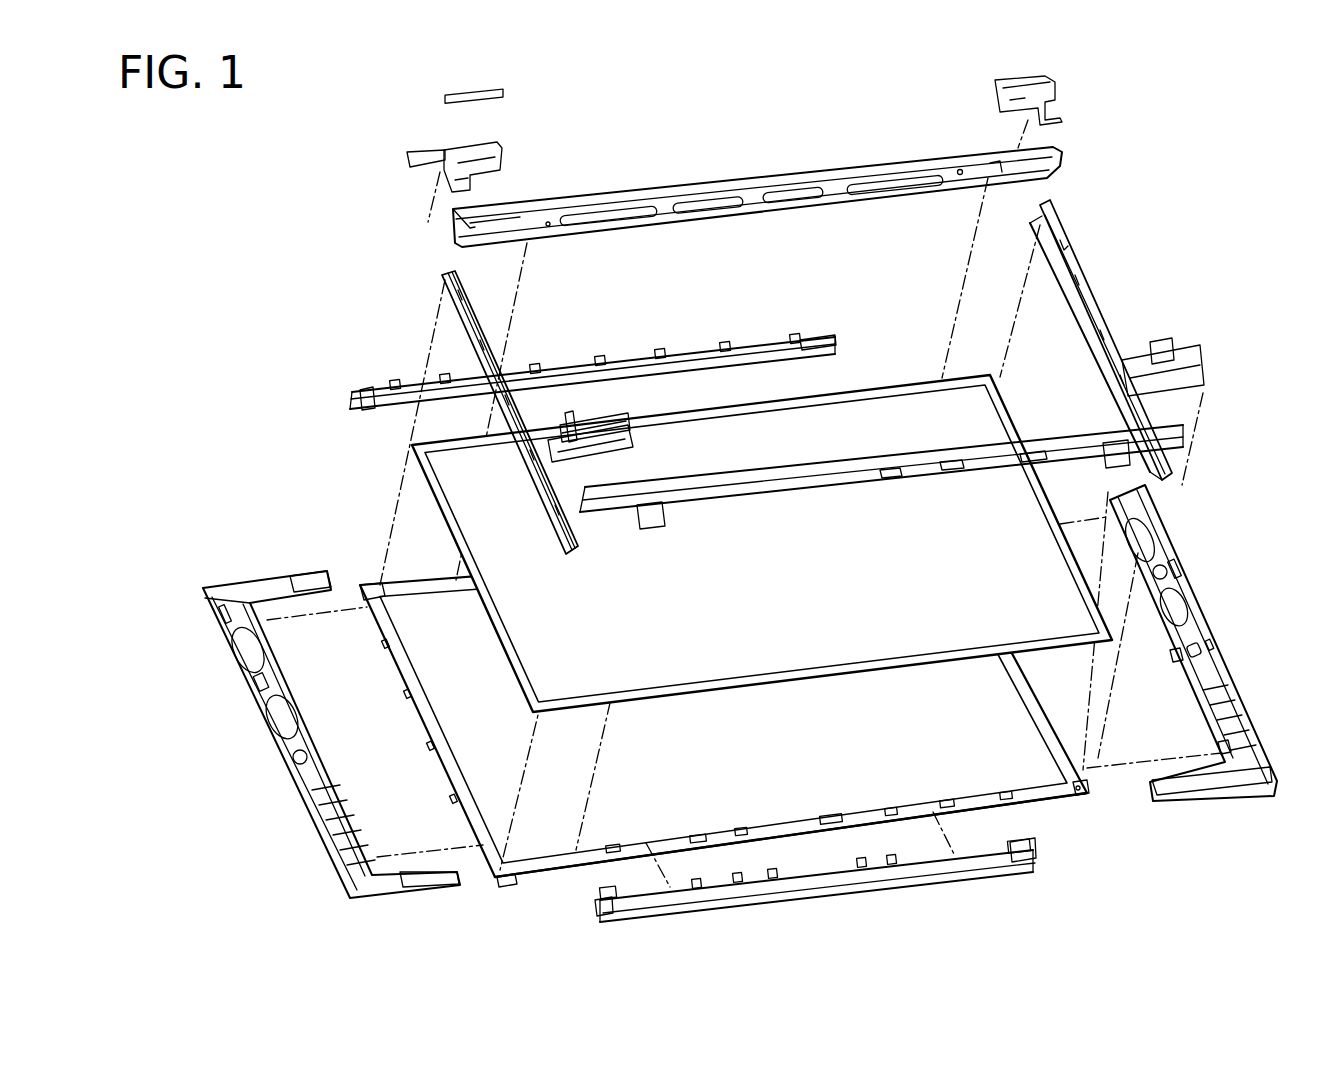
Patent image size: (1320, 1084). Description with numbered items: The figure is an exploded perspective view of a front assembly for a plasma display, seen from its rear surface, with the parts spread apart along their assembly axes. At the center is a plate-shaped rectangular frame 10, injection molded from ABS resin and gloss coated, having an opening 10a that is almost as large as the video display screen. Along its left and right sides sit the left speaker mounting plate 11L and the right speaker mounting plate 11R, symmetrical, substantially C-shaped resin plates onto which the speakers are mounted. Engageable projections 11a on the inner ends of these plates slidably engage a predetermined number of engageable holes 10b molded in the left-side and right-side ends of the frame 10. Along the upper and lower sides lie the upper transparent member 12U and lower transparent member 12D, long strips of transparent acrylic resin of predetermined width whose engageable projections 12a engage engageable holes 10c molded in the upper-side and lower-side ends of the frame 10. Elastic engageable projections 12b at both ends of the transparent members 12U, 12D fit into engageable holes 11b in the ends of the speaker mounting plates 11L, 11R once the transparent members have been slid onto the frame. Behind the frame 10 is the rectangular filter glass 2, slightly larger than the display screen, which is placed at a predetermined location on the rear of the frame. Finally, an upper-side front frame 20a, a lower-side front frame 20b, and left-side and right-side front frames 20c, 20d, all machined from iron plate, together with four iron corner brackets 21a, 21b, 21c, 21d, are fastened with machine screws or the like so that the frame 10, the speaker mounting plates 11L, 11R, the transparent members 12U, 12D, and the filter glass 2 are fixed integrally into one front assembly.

The filter glass 2 is at (873, 620).
The frame 10 is at (1040, 798).
The opening 10a is at (580, 855).
The engageable holes 10b is at (370, 600).
The engageable holes 10c is at (648, 838).
The right speaker mounting plate 11R is at (282, 745).
The left speaker mounting plate 11L is at (1193, 633).
The engageable projections 11a is at (1175, 655).
The engageable holes 11b is at (320, 578).
The upper transparent member 12U is at (738, 345).
The lower transparent member 12D is at (1010, 875).
The engageable projections 12a is at (455, 392).
The engageable projections 12b is at (360, 404).
The upper-side front frame 20a is at (748, 190).
The lower-side front frame 20b is at (876, 477).
The right-side front frame 20c is at (1090, 303).
The left-side front frame 20d is at (525, 458).
The corner bracket 21a is at (500, 157).
The corner bracket 21b is at (1058, 82).
The corner bracket 21c is at (635, 445).
The corner bracket 21d is at (1170, 362).